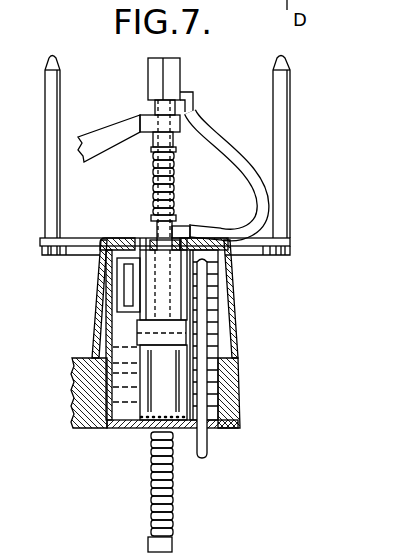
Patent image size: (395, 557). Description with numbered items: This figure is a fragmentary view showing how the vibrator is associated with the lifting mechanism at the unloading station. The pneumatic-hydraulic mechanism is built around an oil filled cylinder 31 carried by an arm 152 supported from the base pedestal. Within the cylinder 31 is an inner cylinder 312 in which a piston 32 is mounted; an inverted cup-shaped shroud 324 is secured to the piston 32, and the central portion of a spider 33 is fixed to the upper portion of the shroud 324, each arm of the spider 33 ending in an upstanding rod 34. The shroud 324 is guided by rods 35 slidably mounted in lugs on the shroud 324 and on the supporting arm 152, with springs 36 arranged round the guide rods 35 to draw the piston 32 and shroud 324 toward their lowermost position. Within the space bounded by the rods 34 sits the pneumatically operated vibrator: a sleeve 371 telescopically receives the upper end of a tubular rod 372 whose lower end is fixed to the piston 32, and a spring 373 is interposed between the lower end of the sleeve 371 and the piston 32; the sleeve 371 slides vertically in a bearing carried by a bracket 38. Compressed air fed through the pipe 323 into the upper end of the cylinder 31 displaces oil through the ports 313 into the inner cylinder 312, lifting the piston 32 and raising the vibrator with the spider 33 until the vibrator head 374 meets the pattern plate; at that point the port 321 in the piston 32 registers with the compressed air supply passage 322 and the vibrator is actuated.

The oil filled cylinder 31 is at (219, 302).
The piston 32 is at (143, 330).
The spider 33 is at (291, 242).
The upstanding rod 34 is at (46, 164).
The guide rod 35 is at (170, 548).
The spring 36 is at (169, 483).
The bracket 38 is at (101, 135).
The arm 152 is at (97, 422).
The inner cylinder 312 is at (192, 372).
The port 313 is at (140, 424).
The port 321 is at (138, 338).
The compressed air supply passage 322 is at (121, 274).
The pipe 323 is at (197, 441).
The inverted cup-shaped shroud 324 is at (233, 346).
The sleeve 371 is at (155, 106).
The tubular rod 372 is at (156, 176).
The spring 373 is at (179, 200).
The vibrator head 374 is at (176, 78).